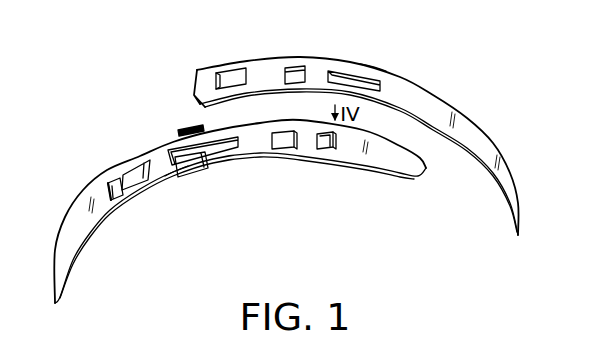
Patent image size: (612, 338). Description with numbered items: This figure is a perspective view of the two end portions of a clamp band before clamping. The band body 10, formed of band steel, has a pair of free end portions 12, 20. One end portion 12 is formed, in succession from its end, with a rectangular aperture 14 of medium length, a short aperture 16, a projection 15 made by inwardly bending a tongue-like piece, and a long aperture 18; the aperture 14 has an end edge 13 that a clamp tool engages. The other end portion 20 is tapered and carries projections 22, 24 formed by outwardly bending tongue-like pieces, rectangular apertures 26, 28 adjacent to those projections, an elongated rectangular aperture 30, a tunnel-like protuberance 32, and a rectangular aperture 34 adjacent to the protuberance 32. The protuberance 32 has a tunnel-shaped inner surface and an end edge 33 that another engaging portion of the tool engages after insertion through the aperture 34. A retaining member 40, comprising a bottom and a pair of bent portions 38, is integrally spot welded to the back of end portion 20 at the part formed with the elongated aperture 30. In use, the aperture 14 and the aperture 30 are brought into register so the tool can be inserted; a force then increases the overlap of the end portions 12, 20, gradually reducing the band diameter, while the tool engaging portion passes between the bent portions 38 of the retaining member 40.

The band body 10 is at (287, 156).
The end portion 12 is at (263, 86).
The end edge 13 is at (219, 73).
The rectangular aperture 14 is at (213, 52).
The projection 15 is at (363, 80).
The short aperture 16 is at (297, 70).
The long aperture 18 is at (372, 68).
The end portion 20 is at (257, 147).
The projection 22 is at (337, 143).
The projection 24 is at (297, 150).
The rectangular aperture 26 is at (338, 153).
The rectangular aperture 28 is at (291, 153).
The elongated rectangular aperture 30 is at (220, 148).
The tunnel-like protuberance 32 is at (130, 172).
The end edge 33 is at (112, 183).
The rectangular aperture 34 is at (93, 208).
The bent portions 38 is at (190, 128).
The retaining member 40 is at (178, 193).